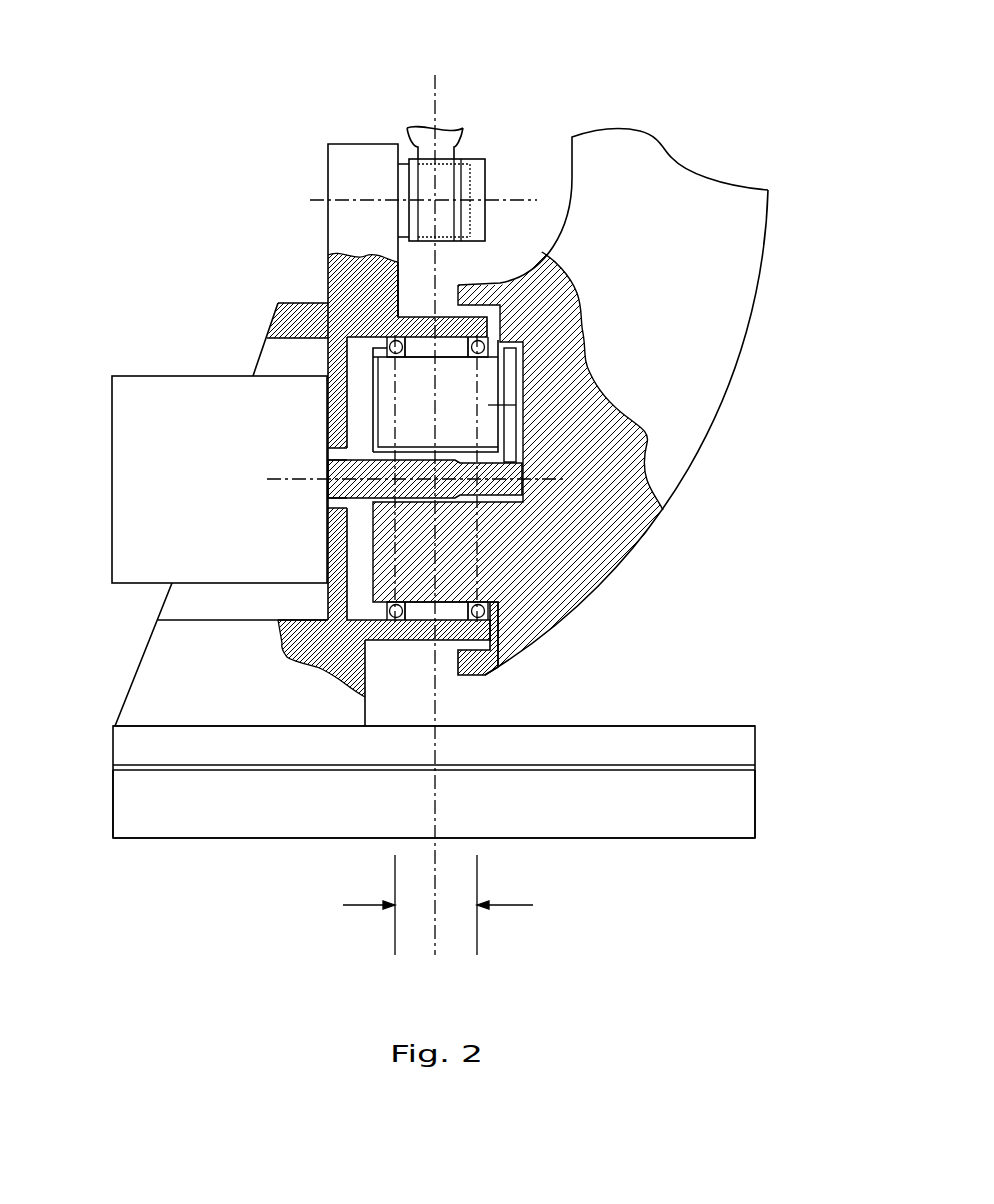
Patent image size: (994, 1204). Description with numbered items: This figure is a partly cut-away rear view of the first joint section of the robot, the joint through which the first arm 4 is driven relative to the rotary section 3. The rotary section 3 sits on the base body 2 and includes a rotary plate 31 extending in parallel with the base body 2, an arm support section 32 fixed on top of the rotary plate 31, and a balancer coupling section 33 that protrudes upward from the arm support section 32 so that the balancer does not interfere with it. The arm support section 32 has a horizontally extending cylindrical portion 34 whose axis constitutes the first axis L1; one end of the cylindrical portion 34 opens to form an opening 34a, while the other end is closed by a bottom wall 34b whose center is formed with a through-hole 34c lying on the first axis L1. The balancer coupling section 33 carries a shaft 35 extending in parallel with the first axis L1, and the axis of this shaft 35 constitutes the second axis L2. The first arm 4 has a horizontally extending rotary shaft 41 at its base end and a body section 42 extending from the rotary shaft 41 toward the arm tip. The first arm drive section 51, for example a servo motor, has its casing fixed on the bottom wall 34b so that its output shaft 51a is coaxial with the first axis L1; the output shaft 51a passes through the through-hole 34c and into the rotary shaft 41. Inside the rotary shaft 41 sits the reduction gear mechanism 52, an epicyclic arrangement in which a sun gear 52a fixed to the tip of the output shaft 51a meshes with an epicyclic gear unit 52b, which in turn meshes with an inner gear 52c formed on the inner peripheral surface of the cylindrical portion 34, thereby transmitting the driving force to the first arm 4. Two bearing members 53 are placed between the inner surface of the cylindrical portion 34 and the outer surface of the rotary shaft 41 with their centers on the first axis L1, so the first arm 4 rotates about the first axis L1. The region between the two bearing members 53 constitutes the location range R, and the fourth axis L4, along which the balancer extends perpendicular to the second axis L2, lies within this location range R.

The base body 2 is at (293, 822).
The rotary section 3 is at (736, 726).
The rotary plate 31 is at (688, 752).
The arm support section 32 is at (168, 680).
The balancer coupling section 33 is at (350, 166).
The cylindrical portion 34 is at (417, 640).
The opening 34a is at (499, 640).
The bottom wall 34b is at (327, 600).
The through-hole 34c is at (325, 452).
The shaft 35 is at (472, 180).
The first arm 4 is at (740, 272).
The rotary shaft 41 is at (460, 548).
The body section 42 is at (720, 355).
The first arm drive section 51 is at (150, 476).
The output shaft 51a is at (325, 487).
The reduction gear mechanism 52 is at (418, 403).
The sun gear 52a is at (510, 457).
The epicyclic gear unit 52b is at (450, 383).
The inner gear 52c is at (423, 348).
The bearing members 53 is at (400, 640).
The first axis L1 is at (308, 478).
The second axis L2 is at (317, 200).
The fourth axis L4 is at (437, 98).
The location range R is at (515, 905).